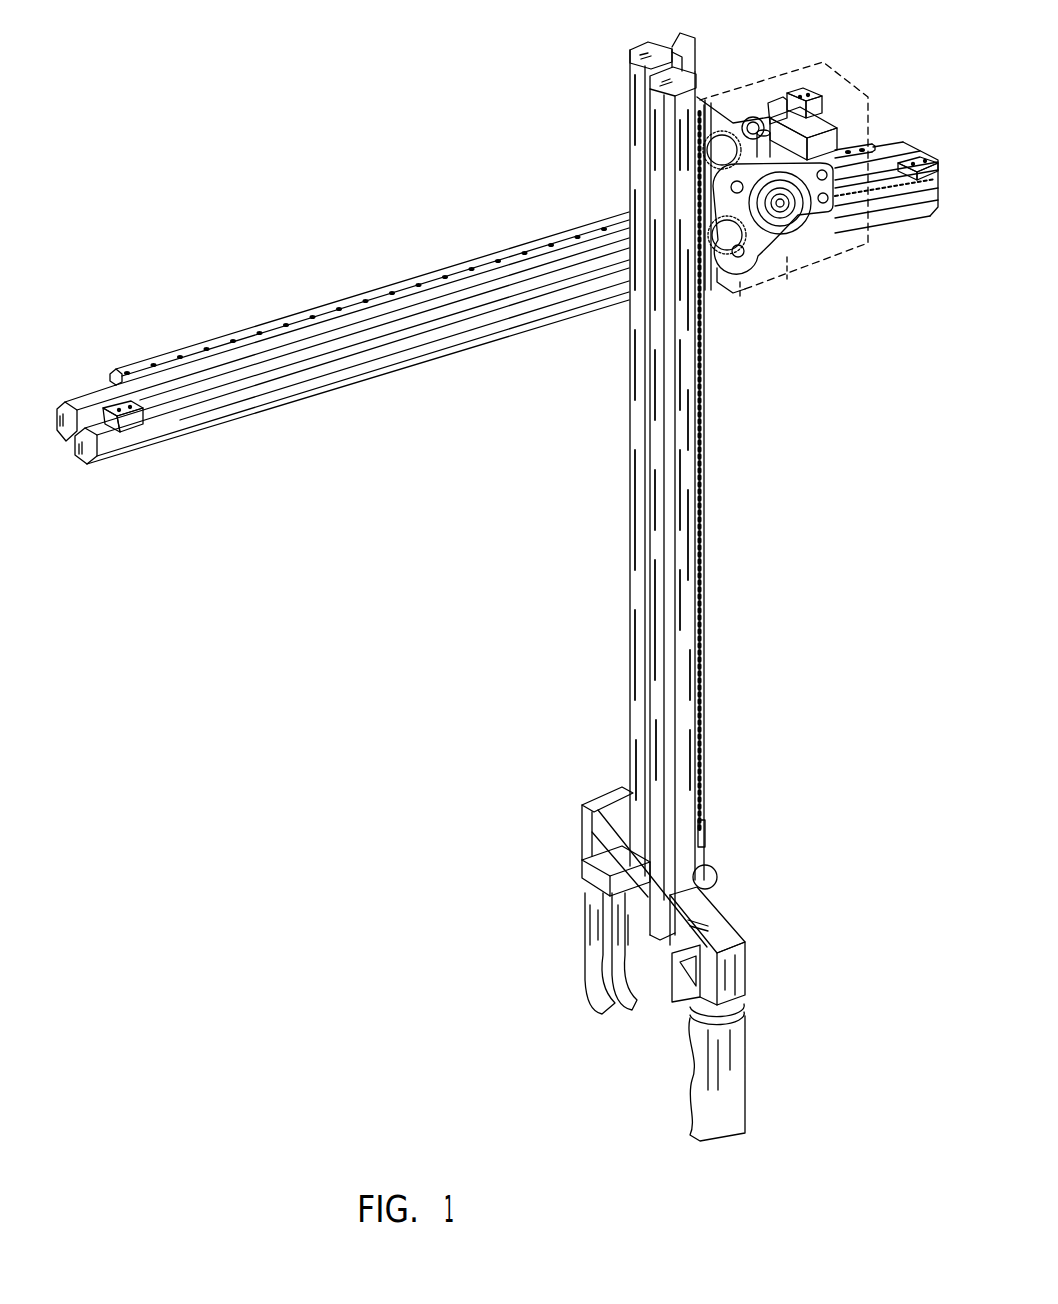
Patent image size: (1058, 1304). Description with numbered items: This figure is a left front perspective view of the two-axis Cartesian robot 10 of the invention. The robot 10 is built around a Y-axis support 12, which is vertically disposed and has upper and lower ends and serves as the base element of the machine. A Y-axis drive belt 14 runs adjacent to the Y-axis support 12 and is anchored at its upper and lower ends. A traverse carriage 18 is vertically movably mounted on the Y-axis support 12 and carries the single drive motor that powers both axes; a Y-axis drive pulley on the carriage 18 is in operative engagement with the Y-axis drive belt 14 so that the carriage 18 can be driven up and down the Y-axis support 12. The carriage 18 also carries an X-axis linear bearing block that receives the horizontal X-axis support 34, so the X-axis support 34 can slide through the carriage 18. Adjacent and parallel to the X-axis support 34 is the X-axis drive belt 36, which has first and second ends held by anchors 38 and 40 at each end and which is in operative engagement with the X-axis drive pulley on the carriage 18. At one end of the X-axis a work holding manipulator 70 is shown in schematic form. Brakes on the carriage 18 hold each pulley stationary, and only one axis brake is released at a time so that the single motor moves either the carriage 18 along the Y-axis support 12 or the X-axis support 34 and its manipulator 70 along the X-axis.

The two-axis Cartesian robot 10 is at (420, 147).
The Y-axis support 12 is at (627, 521).
The Y-axis drive belt 14 is at (704, 465).
The traverse carriage 18 is at (770, 70).
The X-axis support 34 is at (291, 396).
The X-axis drive belt 36 is at (353, 340).
The anchor 38 is at (128, 422).
The anchor 40 is at (940, 178).
The work holding manipulator 70 is at (566, 937).